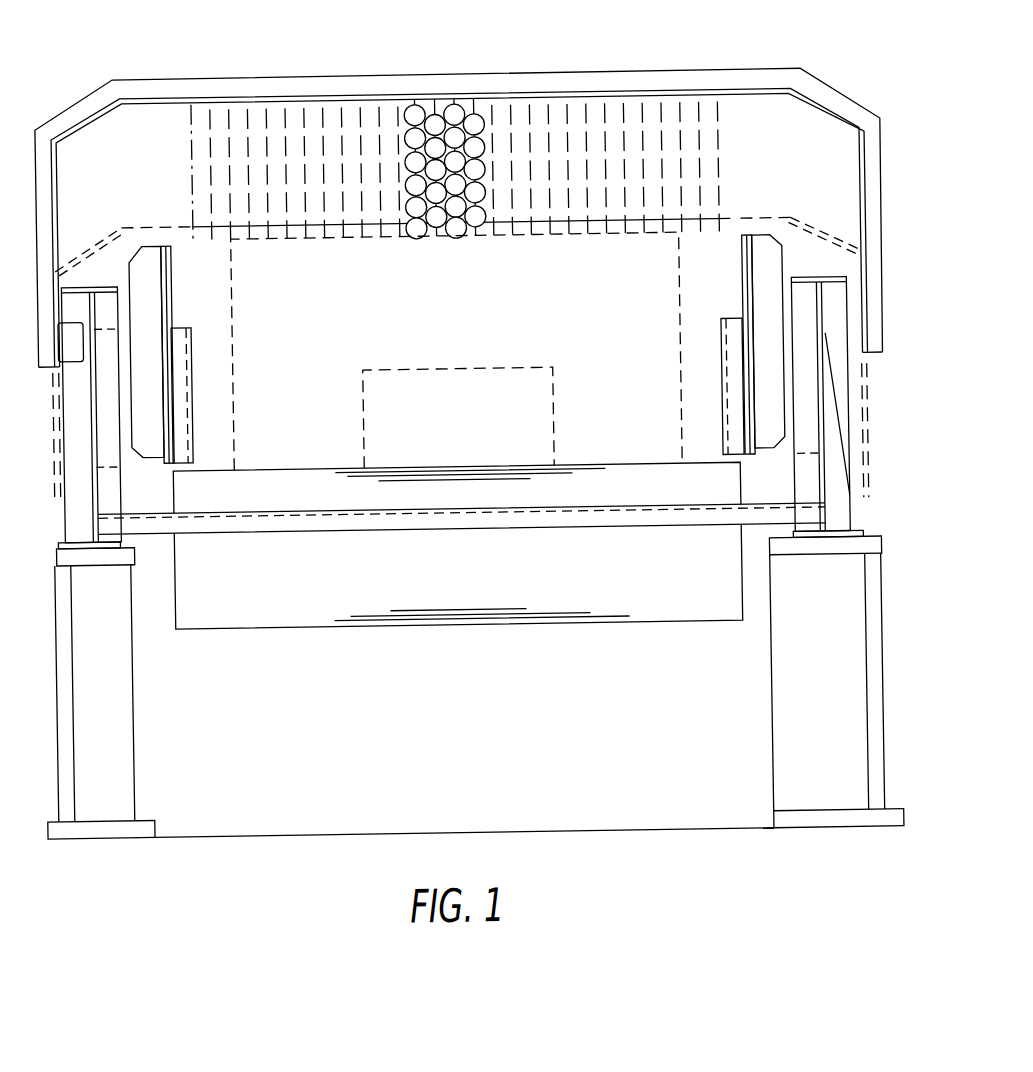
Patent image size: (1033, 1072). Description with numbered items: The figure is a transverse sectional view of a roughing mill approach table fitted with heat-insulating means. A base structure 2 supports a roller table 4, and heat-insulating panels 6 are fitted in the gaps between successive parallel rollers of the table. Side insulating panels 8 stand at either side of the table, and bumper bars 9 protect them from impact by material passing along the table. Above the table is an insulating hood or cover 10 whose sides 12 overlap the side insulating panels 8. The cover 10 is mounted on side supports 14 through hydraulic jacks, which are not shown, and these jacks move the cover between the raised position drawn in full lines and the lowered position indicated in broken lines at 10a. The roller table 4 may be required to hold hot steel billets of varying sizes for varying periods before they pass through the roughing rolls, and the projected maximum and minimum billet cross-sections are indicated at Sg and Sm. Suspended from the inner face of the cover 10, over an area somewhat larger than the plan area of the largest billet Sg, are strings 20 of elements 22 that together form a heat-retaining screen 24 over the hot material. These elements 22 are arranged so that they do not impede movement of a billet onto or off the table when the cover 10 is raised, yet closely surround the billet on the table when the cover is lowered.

The base structure 2 is at (118, 754).
The roller table 4 is at (225, 604).
The heat-insulating panels 6 is at (665, 523).
The side insulating panels 8 is at (155, 290).
The bumper bars 9 is at (186, 373).
The insulating hood 10 is at (848, 90).
The lowered position of the cover 10a is at (110, 231).
The sides of the cover 12 is at (880, 354).
The side supports 14 is at (866, 457).
The strings 20 is at (537, 250).
The elements 22 is at (424, 228).
The heat-retaining screen 24 is at (190, 145).
The maximum billet cross-section Sg is at (686, 278).
The minimum billet cross-section Sm is at (554, 428).